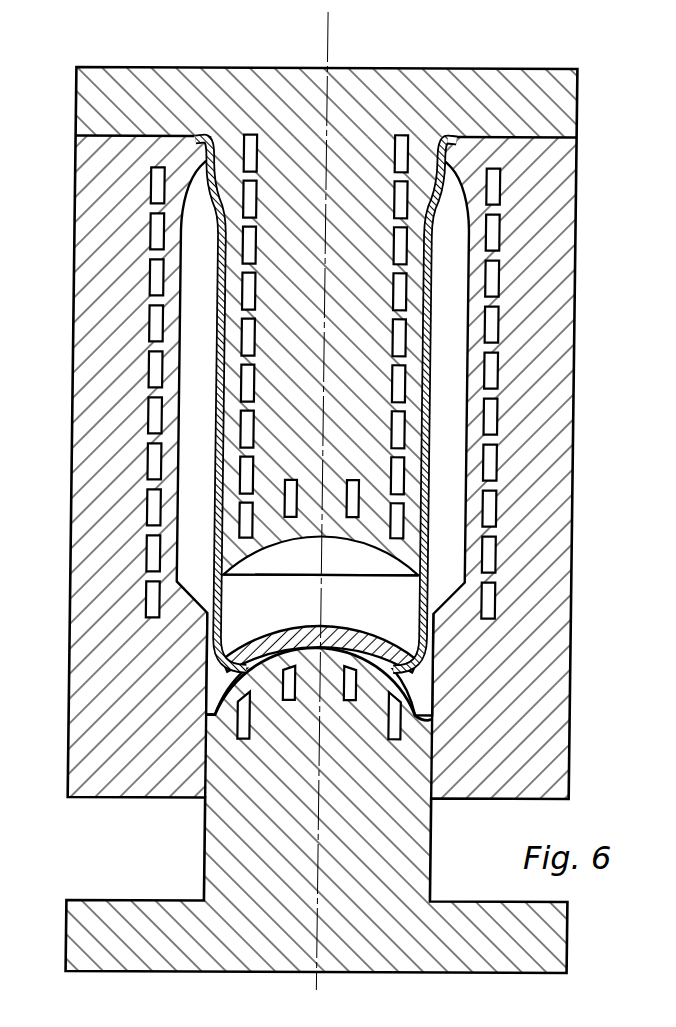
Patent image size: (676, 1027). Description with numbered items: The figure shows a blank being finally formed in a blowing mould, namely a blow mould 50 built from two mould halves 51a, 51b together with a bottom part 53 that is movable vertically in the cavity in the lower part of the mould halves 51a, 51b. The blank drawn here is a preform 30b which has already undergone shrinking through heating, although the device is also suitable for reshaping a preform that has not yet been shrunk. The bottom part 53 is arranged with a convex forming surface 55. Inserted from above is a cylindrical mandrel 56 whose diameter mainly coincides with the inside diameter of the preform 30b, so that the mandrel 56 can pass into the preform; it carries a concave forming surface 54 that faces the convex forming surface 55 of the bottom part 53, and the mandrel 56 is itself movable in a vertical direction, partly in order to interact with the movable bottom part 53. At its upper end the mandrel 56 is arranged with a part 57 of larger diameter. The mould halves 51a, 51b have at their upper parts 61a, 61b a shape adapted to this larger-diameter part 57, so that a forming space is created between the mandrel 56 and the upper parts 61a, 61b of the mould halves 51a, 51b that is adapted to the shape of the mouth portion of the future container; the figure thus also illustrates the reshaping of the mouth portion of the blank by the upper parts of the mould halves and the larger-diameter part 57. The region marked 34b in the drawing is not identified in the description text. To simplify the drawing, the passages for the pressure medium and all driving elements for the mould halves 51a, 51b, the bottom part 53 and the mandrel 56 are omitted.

The blow mould 50 is at (230, 67).
The mould half 51a is at (98, 271).
The mould half 51b is at (546, 291).
The bottom part 53 is at (414, 856).
The concave forming surface 54 is at (283, 544).
The convex forming surface 55 is at (423, 693).
The cylindrical mandrel 56 is at (351, 269).
The part of larger diameter 57 is at (418, 141).
The upper part of mould half 61a is at (194, 152).
The upper part of mould half 61b is at (449, 156).
The preform 30b is at (447, 379).
The diaphragm 34b is at (356, 638).